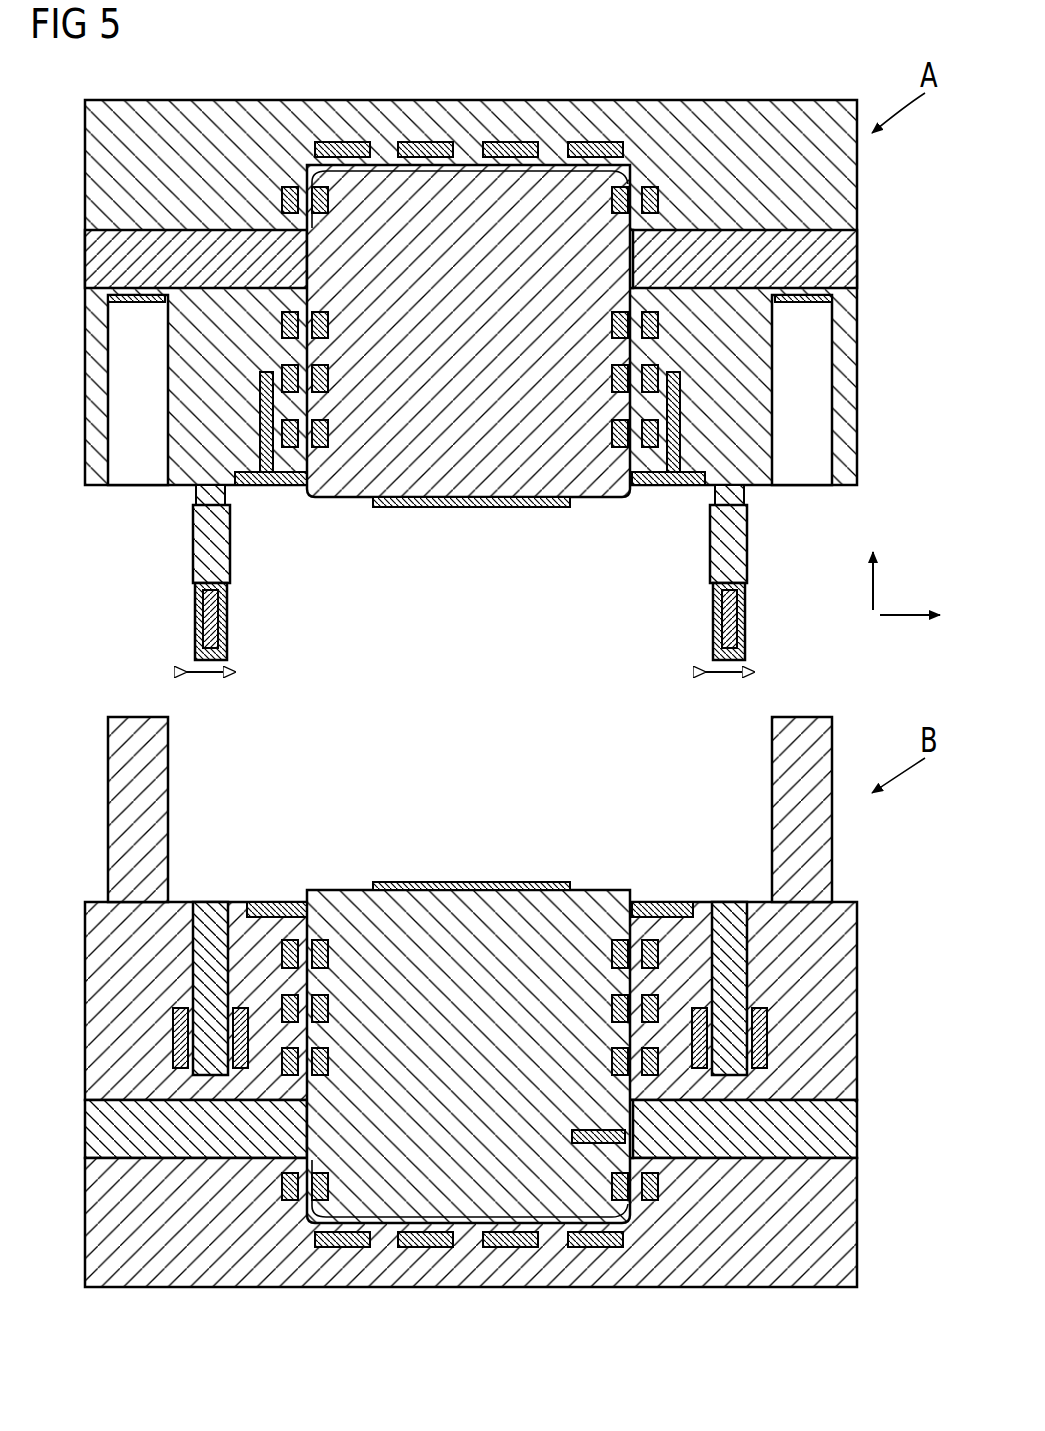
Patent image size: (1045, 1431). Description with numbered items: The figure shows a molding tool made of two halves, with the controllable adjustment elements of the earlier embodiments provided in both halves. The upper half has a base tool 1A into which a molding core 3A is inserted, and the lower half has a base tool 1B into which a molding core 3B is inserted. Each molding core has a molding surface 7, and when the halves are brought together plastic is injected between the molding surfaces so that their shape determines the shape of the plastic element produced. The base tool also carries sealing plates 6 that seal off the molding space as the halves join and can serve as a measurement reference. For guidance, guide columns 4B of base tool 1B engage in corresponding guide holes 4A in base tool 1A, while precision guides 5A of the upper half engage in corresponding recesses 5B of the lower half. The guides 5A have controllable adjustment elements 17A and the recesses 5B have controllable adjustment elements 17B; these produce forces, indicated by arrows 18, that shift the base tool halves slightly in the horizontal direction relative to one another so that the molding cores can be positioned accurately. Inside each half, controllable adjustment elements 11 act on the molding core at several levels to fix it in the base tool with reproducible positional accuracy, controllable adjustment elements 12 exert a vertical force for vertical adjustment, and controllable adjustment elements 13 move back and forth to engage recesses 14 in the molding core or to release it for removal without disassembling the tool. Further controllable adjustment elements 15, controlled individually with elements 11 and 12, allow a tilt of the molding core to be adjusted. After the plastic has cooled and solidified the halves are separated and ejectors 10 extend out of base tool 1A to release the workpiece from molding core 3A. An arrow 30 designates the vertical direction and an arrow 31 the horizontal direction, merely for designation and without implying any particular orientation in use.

The base tool of first half 1A is at (838, 186).
The guide holes 4A is at (125, 401).
The ejectors 10 is at (260, 431).
The molding core of first half 3A is at (578, 508).
The precision guides 5A is at (222, 571).
The controllable adjustment elements of the guides 17A is at (226, 626).
The arrows indicating horizontal adjustment forces 18 is at (228, 678).
The arrow indicating vertical direction 30 is at (874, 583).
The arrow indicating horizontal direction 31 is at (900, 618).
The guide columns 4B is at (160, 786).
The recesses for precision guides 5B is at (215, 905).
The controllable adjustment elements 11 is at (290, 952).
The sealing plates 6 is at (280, 902).
The molding surface 7 is at (470, 882).
The controllable adjustment elements of the recesses 17B is at (175, 1023).
The controllable adjustment elements 13 is at (88, 1128).
The molding core of second half 3B is at (305, 1098).
The recesses 14 is at (300, 1141).
The controllable adjustment elements 12 is at (625, 1136).
The further controllable adjustment elements 15 is at (660, 1200).
The base tool of second half 1B is at (838, 1221).